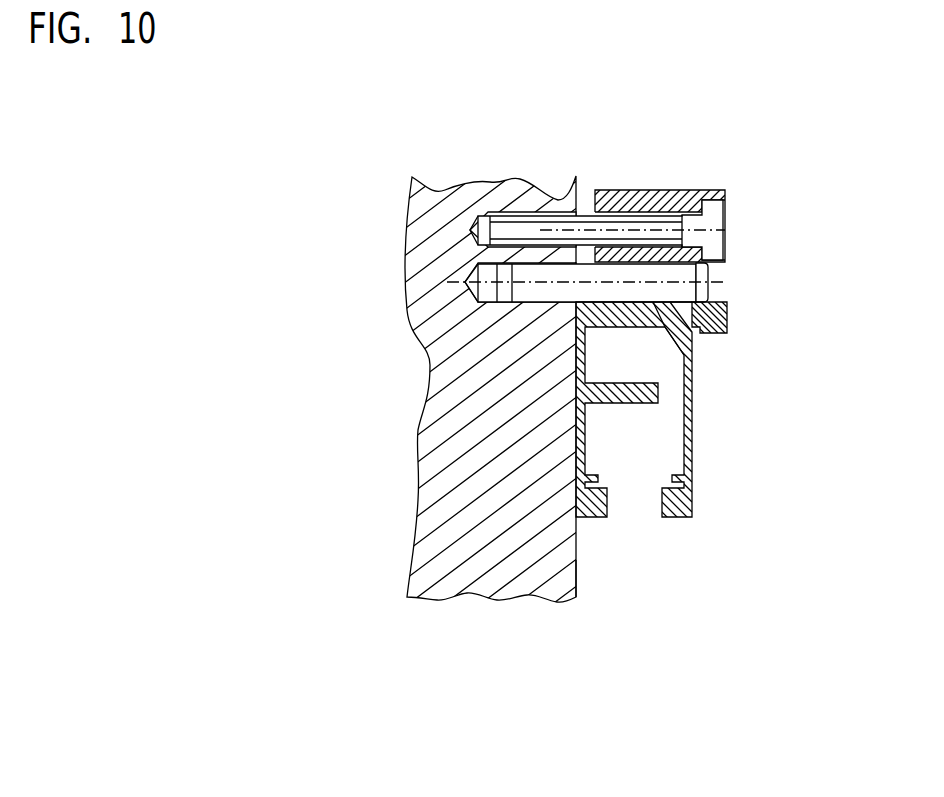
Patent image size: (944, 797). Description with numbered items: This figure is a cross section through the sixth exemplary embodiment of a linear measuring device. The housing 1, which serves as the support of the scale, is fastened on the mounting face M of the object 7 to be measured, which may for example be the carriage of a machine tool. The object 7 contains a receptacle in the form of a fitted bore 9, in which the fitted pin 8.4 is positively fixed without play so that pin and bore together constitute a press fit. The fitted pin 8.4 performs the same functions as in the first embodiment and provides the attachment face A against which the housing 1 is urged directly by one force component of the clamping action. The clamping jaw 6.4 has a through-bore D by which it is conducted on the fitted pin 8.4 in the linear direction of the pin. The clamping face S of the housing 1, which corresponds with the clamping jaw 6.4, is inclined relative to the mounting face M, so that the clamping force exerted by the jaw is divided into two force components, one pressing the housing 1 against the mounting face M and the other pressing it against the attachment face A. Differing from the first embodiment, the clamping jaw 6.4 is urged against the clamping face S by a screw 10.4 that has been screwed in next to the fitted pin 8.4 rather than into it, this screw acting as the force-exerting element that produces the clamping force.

The housing 1 is at (693, 512).
The object to be measured 7 is at (450, 545).
The fitted bore 9 is at (518, 341).
The clamping jaw 6.4 is at (642, 189).
The fitted pin 8.4 is at (543, 270).
The screw 10.4 is at (713, 217).
The through-bore D is at (713, 290).
The clamping face S is at (705, 335).
The attachment face A is at (685, 350).
The mounting face M is at (579, 590).